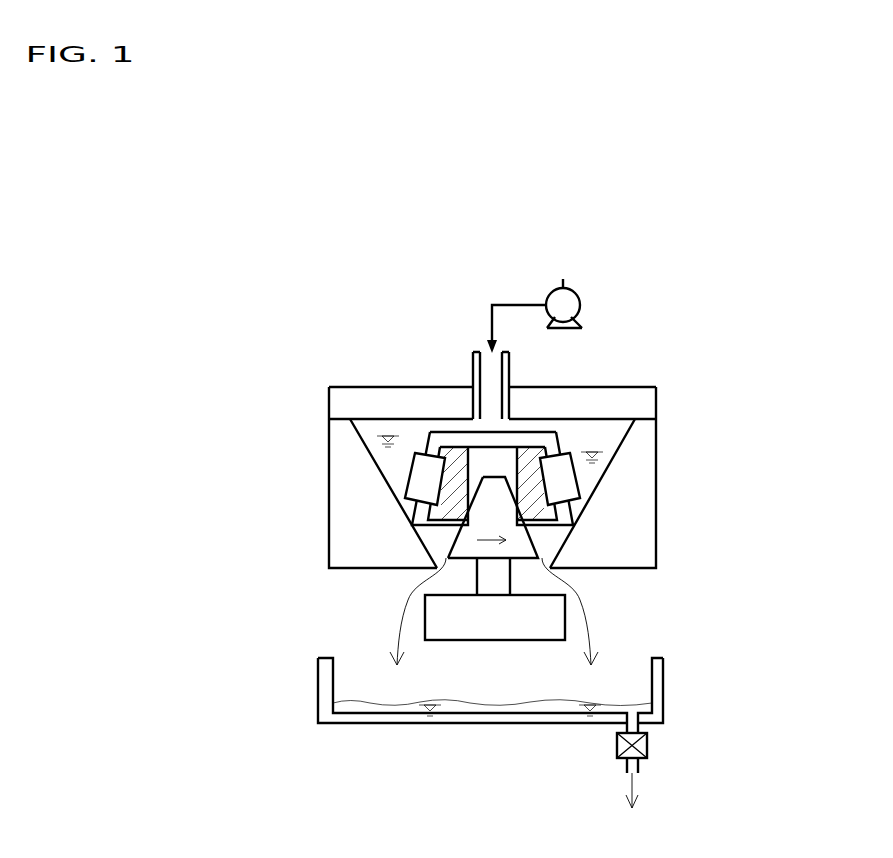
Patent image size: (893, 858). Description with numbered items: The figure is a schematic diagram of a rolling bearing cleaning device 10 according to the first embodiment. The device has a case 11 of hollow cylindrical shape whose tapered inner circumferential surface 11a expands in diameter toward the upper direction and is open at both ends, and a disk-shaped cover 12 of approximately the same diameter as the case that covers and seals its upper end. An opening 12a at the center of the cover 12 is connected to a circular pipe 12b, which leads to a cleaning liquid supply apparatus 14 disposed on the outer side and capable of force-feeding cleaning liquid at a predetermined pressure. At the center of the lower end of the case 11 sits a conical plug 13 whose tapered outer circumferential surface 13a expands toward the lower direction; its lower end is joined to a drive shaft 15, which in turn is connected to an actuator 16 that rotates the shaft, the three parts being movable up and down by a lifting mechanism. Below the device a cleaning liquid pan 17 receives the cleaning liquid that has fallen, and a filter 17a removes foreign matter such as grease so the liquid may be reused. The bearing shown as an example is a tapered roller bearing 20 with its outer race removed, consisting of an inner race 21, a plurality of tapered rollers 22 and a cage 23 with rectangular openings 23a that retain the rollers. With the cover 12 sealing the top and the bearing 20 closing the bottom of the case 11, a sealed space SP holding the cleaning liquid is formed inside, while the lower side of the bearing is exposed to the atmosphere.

The rolling bearing cleaning device 10 is at (353, 351).
The case 11 is at (657, 569).
The tapered inner circumferential surface 11a is at (572, 537).
The cover 12 is at (656, 387).
The opening 12a is at (472, 388).
The circular pipe 12b is at (509, 363).
The plug 13 is at (445, 558).
The tapered outer circumferential surface 13a is at (456, 535).
The cleaning liquid supply apparatus 14 is at (581, 305).
The drive shaft 15 is at (492, 585).
The actuator 16 is at (518, 628).
The cleaning liquid pan 17 is at (664, 678).
The filter 17a is at (647, 745).
The tapered roller bearing 20 is at (580, 510).
The inner race 21 is at (445, 440).
The tapered rollers 22 is at (410, 480).
The cage 23 is at (430, 434).
The rectangular openings 23a is at (440, 449).
The sealed space SP is at (590, 430).